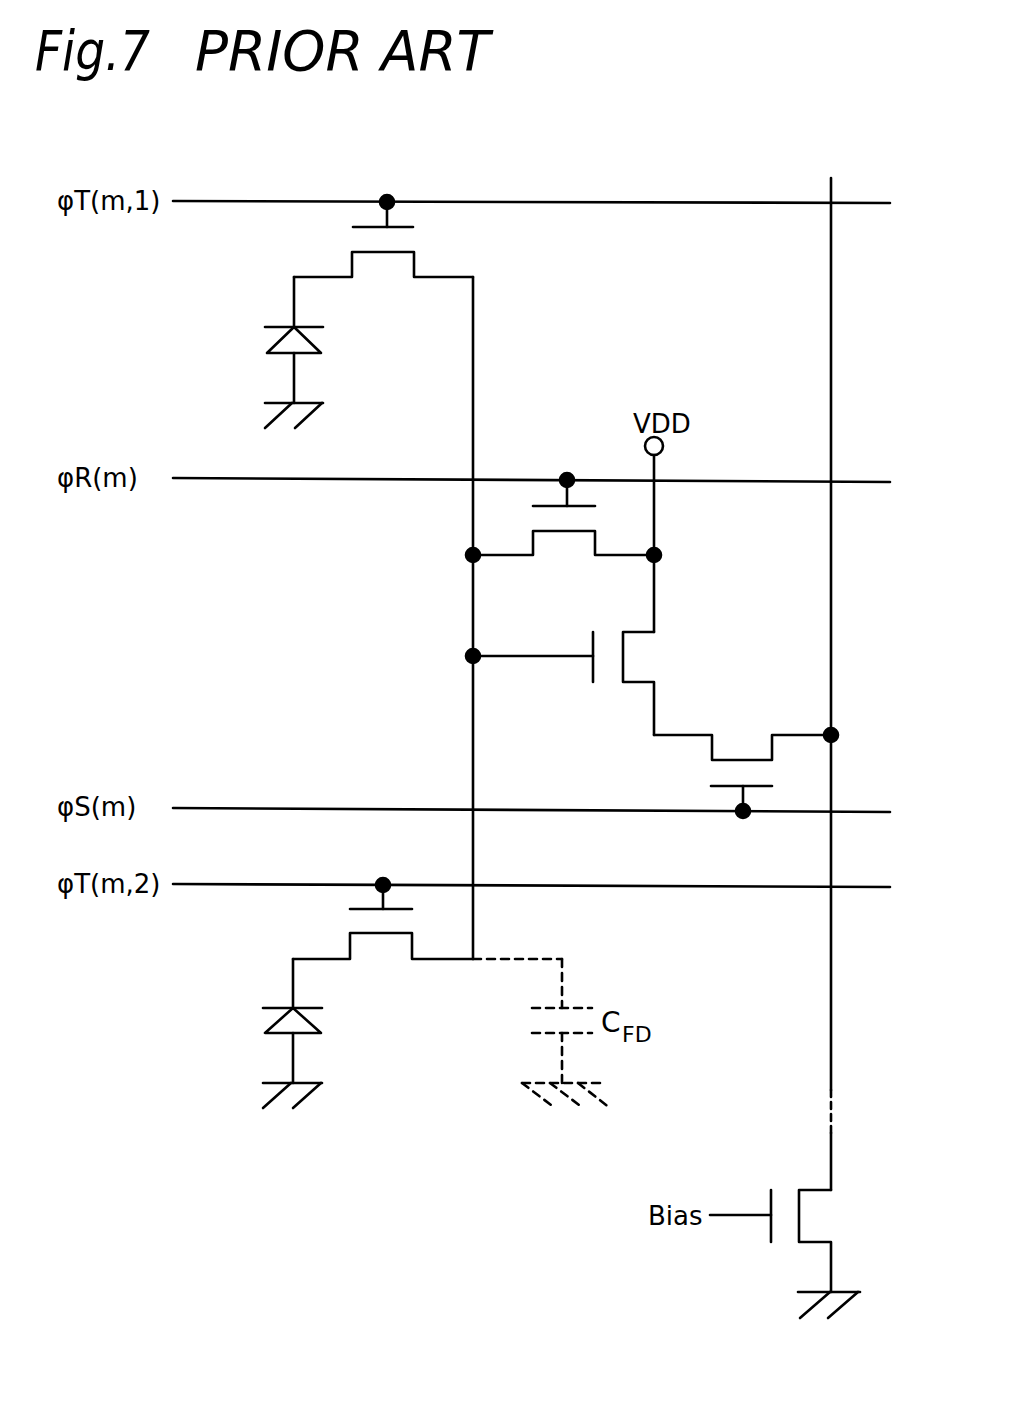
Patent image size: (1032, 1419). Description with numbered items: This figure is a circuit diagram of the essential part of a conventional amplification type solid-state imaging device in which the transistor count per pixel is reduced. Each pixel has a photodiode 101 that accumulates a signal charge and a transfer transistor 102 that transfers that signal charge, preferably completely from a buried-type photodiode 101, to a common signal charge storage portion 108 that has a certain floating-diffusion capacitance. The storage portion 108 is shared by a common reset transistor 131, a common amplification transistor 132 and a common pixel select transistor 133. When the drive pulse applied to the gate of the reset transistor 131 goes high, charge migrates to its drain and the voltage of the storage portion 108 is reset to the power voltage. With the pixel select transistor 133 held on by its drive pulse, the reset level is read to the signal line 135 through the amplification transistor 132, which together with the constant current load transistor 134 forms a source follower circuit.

The photodiode 101 is at (322, 338).
The transfer transistor 102 is at (380, 268).
The common signal charge storage portion 108 is at (470, 687).
The reset transistor 131 is at (566, 548).
The amplification transistor 132 is at (637, 654).
The pixel select transistor 133 is at (747, 742).
The constant current load transistor 134 is at (823, 1217).
The signal line 135 is at (831, 945).